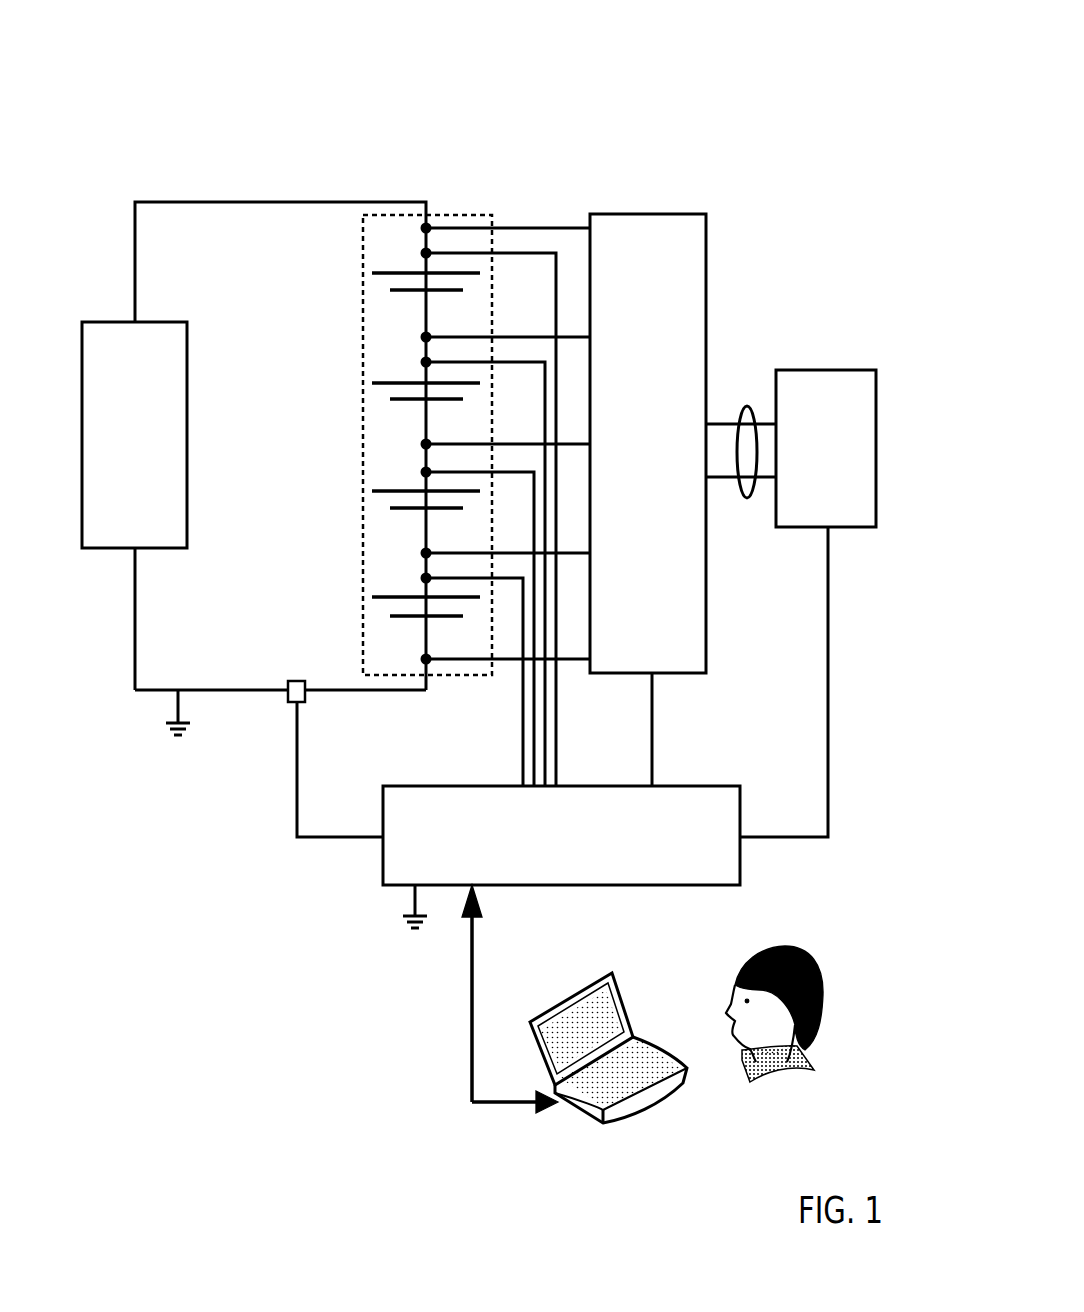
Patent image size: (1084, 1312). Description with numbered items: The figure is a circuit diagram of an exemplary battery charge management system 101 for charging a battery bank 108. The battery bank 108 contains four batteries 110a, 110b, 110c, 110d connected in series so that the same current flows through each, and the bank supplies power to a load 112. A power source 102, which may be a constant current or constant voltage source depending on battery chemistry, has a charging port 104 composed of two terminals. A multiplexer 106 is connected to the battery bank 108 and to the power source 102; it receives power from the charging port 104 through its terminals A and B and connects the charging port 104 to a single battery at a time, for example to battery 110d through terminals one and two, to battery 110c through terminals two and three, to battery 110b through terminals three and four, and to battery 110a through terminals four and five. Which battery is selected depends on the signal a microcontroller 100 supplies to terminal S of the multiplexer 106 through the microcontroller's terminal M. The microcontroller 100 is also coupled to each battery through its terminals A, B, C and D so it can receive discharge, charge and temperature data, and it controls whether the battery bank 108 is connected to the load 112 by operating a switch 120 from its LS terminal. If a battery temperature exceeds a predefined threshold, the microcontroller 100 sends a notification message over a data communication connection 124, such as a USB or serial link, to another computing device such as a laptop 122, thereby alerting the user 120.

The microcontroller 100 is at (649, 848).
The battery charge management system 101 is at (803, 83).
The power source 102 is at (843, 490).
The charging port 104 is at (824, 354).
The multiplexer 106 is at (665, 470).
The battery bank 108 is at (380, 213).
The battery 110a is at (346, 286).
The battery 110b is at (346, 393).
The battery 110c is at (346, 499).
The battery 110d is at (346, 608).
The load 112 is at (152, 461).
The switch 120 is at (349, 724).
The laptop 122 is at (670, 1166).
The data communication connection 124 is at (490, 1051).